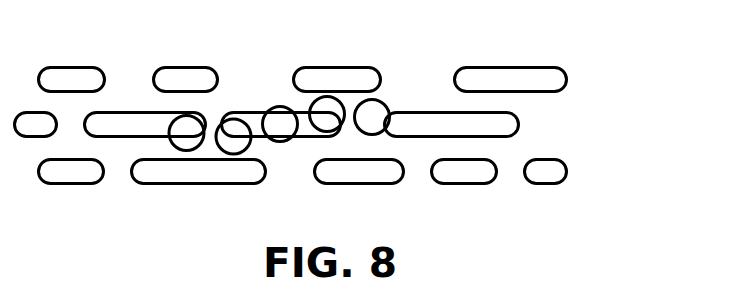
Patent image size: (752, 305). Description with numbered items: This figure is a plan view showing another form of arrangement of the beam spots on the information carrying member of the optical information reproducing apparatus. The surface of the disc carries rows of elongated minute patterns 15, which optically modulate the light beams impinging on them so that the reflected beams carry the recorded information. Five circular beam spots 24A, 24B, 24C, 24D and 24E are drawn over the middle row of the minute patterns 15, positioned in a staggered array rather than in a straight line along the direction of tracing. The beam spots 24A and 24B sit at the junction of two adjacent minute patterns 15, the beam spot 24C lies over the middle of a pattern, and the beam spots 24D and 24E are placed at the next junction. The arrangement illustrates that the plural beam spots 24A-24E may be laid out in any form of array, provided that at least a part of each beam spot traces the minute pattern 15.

The minute patterns 15 is at (557, 66).
The beam spot 24A is at (201, 120).
The beam spot 24B is at (245, 120).
The beam spot 24C is at (282, 141).
The beam spot 24D is at (336, 115).
The beam spot 24E is at (386, 104).